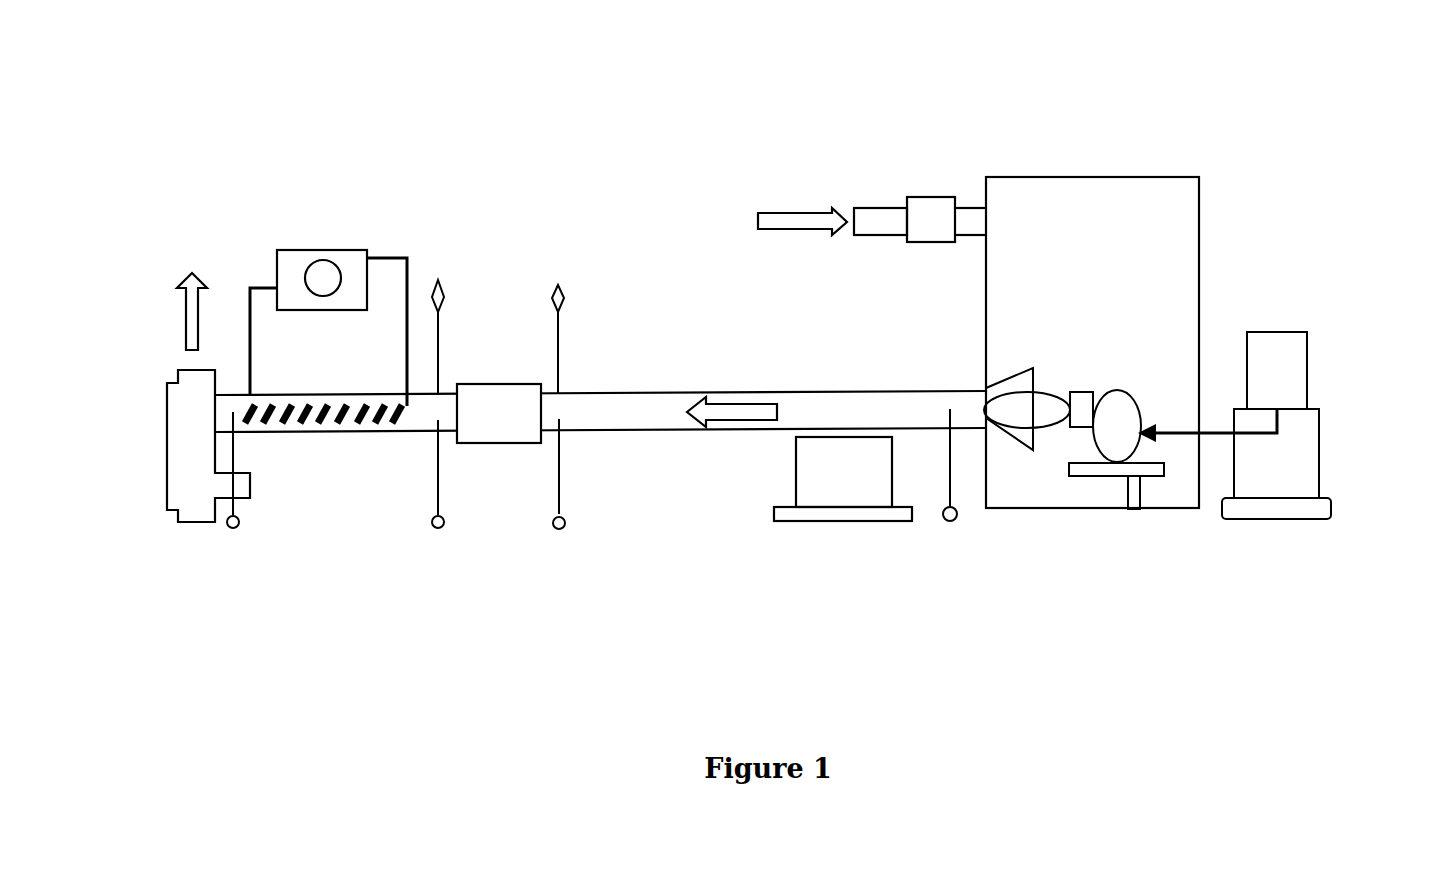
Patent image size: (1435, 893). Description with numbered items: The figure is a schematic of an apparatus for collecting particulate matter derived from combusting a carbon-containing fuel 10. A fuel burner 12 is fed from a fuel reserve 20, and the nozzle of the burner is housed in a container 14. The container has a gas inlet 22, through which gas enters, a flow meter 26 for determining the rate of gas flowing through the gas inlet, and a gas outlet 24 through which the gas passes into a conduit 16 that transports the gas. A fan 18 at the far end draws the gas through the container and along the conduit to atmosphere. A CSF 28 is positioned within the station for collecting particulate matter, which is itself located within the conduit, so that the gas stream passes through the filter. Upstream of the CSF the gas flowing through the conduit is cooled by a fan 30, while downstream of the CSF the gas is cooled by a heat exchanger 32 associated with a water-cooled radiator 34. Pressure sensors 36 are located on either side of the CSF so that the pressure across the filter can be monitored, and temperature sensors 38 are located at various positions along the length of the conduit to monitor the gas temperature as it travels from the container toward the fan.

The apparatus for collecting PM derived from combusting a carbon-containing fuel 10 is at (488, 103).
The fuel burner 12 is at (1110, 368).
The container 14 is at (1203, 148).
The conduit 16 is at (760, 388).
The fan 18 is at (167, 532).
The fuel reserve 20 is at (1311, 341).
The gas inlet 22 is at (856, 186).
The gas outlet 24 is at (1011, 456).
The flow meter 26 is at (937, 175).
The CSF 28 is at (505, 453).
The fan 30 is at (830, 525).
The heat exchanger 32 is at (350, 418).
The water-cooled radiator 34 is at (293, 232).
The pressure sensors 36 is at (441, 263).
The temperature sensors 38 is at (231, 535).